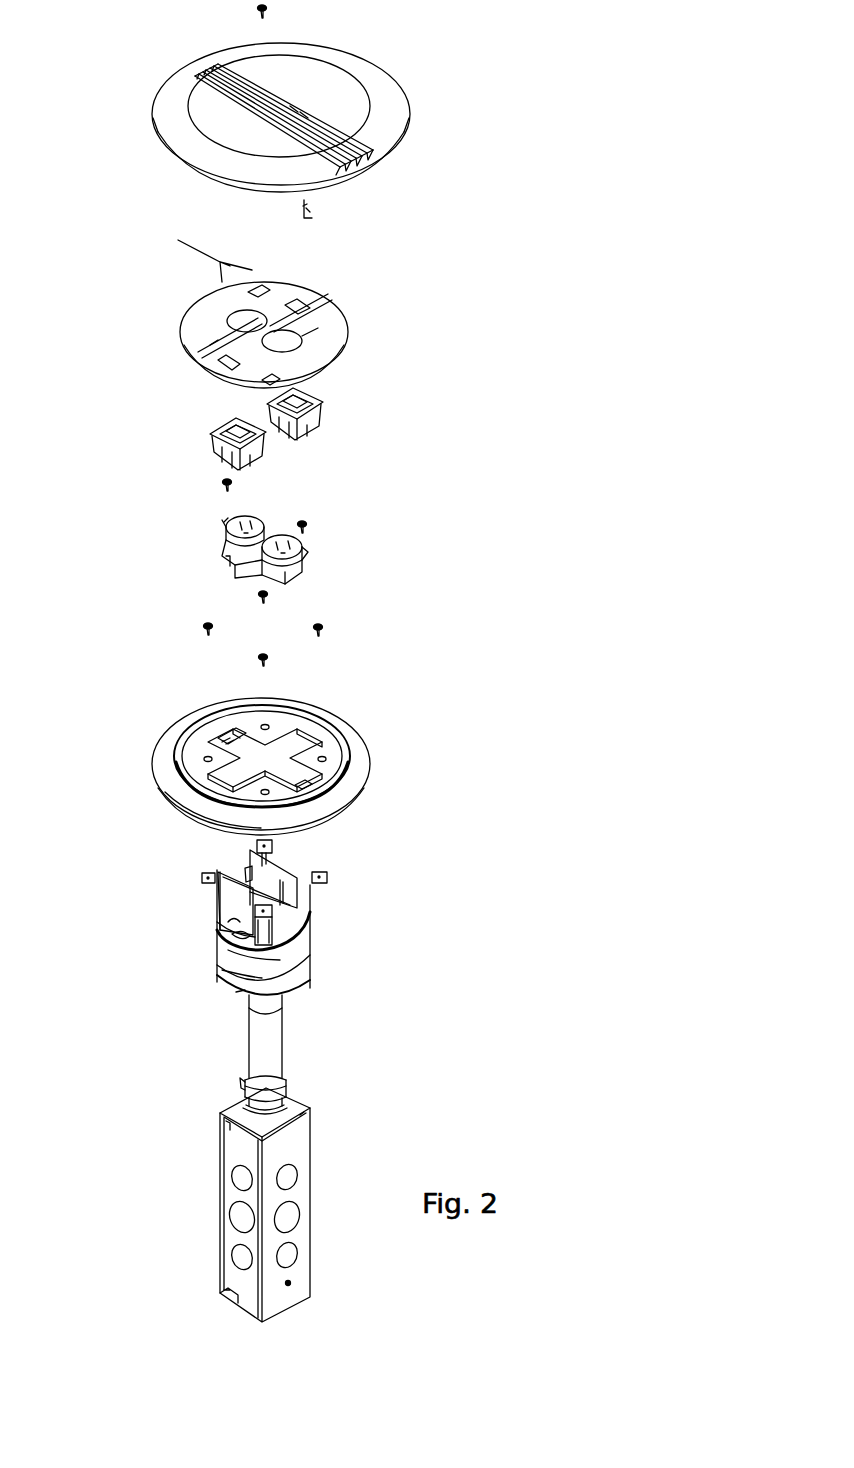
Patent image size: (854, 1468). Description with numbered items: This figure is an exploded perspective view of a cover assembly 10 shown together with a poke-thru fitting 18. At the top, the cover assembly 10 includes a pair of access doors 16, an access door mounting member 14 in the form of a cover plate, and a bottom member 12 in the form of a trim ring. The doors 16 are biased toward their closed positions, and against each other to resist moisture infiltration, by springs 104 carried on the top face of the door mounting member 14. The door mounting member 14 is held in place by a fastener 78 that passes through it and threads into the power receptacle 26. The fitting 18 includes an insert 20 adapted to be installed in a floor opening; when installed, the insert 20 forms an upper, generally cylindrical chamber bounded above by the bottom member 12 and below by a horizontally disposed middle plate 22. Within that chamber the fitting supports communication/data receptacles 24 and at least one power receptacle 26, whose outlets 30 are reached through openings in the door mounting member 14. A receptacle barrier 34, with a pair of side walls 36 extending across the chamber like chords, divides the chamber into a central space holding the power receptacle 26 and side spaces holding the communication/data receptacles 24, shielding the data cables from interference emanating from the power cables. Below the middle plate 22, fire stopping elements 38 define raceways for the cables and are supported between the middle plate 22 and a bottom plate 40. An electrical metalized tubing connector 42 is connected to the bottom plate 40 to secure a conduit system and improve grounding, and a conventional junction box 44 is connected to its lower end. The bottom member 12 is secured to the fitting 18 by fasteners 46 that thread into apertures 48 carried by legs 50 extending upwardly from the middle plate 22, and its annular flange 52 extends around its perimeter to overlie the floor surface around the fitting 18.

The cover assembly 10 is at (430, 78).
The bottom member 12 is at (352, 724).
The access door mounting member 14 is at (332, 327).
The access doors 16 is at (362, 68).
The poke-thru fitting 18 is at (272, 1035).
The insert 20 is at (370, 884).
The middle plate 22 is at (217, 927).
The communication/data receptacles 24 is at (225, 430).
The power receptacle 26 is at (226, 515).
The outlets 30 is at (258, 518).
The receptacle barrier 34 is at (316, 906).
The side walls 36 is at (292, 880).
The fire stopping elements 38 is at (306, 942).
The bottom plate 40 is at (243, 985).
The electrical metalized tubing connector 42 is at (276, 1060).
The junction box 44 is at (290, 1150).
The fasteners 46 is at (223, 482).
The apertures 48 is at (213, 870).
The legs 50 is at (240, 975).
The annular flange 52 is at (362, 775).
The fastener 78 is at (253, 12).
The springs 104 is at (312, 218).